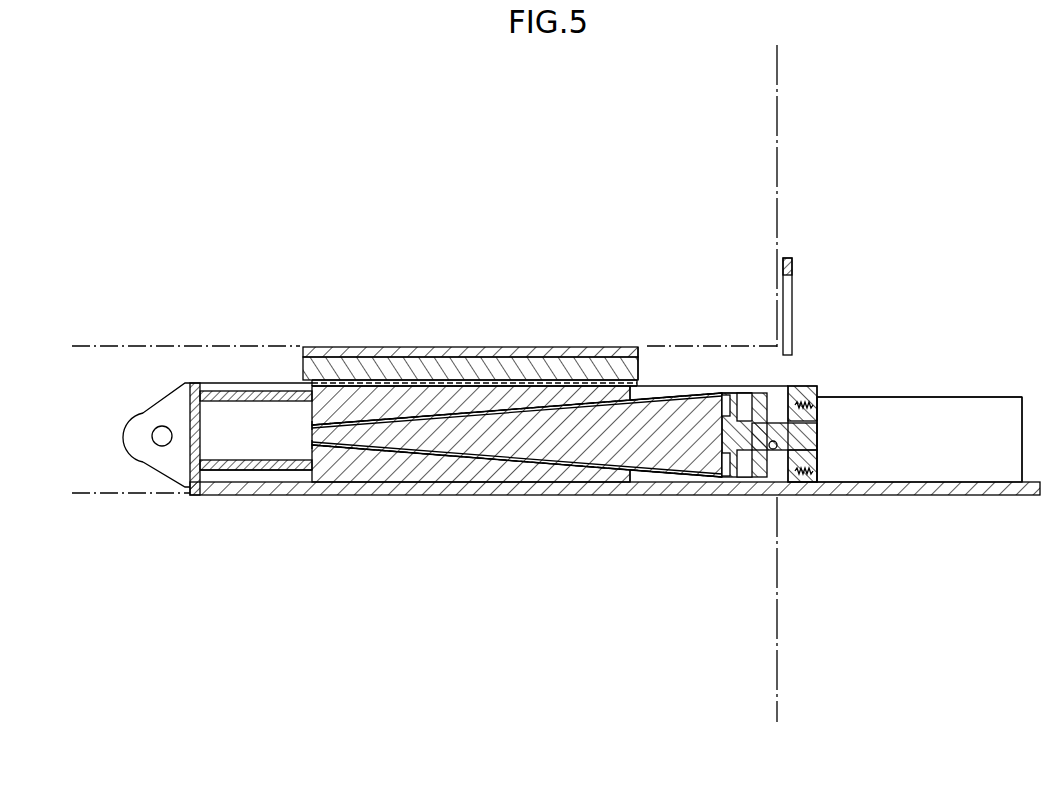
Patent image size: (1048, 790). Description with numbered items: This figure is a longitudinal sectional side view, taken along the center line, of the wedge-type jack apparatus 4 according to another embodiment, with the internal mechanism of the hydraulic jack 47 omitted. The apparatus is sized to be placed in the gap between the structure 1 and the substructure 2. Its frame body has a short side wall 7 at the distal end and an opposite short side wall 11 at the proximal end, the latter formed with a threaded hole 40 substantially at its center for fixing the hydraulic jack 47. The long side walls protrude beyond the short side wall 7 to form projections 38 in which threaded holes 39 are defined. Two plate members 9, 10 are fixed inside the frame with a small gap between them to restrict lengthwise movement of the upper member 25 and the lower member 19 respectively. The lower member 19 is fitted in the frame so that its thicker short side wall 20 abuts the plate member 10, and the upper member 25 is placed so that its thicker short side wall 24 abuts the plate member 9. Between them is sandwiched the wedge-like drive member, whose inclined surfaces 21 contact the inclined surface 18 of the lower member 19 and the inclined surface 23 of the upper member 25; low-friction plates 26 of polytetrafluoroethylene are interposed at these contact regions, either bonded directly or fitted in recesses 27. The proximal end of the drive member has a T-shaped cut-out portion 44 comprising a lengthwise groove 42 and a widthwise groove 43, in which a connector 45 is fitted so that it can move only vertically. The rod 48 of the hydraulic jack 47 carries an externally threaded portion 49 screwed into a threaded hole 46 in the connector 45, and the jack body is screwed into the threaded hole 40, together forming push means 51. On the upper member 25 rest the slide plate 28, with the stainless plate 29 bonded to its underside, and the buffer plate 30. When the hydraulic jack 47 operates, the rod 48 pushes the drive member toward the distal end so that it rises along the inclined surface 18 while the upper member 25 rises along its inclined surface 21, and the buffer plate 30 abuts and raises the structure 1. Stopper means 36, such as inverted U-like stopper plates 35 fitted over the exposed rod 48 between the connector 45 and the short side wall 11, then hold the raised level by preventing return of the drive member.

The structure 1 is at (424, 196).
The substructure 2 is at (424, 607).
The wedge-type jack apparatus 4 is at (1002, 350).
The short side wall 7 is at (188, 417).
The plate member 9 is at (233, 395).
The plate member 10 is at (233, 465).
The short side wall 11 is at (805, 388).
The inclined surface 18 is at (567, 460).
The lower member 19 is at (343, 478).
The short side wall 20 is at (312, 449).
The inclined surface 21 is at (667, 397).
The inclined surface 23 is at (557, 386).
The short side wall 24 is at (312, 413).
The upper member 25 is at (468, 400).
The low-friction plate 26 is at (441, 387).
The recess 27 is at (517, 395).
The slide plate 28 is at (641, 372).
The stainless plate 29 is at (385, 382).
The buffer plate 30 is at (593, 352).
The stopper plate 35 is at (790, 300).
The stopper means 36 is at (798, 262).
The projection 38 is at (170, 462).
The threaded hole 39 is at (160, 437).
The threaded hole 40 is at (820, 462).
The groove 42 is at (748, 397).
The groove 43 is at (728, 397).
The cut-out portion 44 is at (737, 380).
The connector 45 is at (715, 458).
The threaded hole 46 is at (771, 449).
The hydraulic jack 47 is at (968, 407).
The rod 48 is at (800, 437).
The externally threaded portion 49 is at (777, 497).
The push means 51 is at (853, 391).